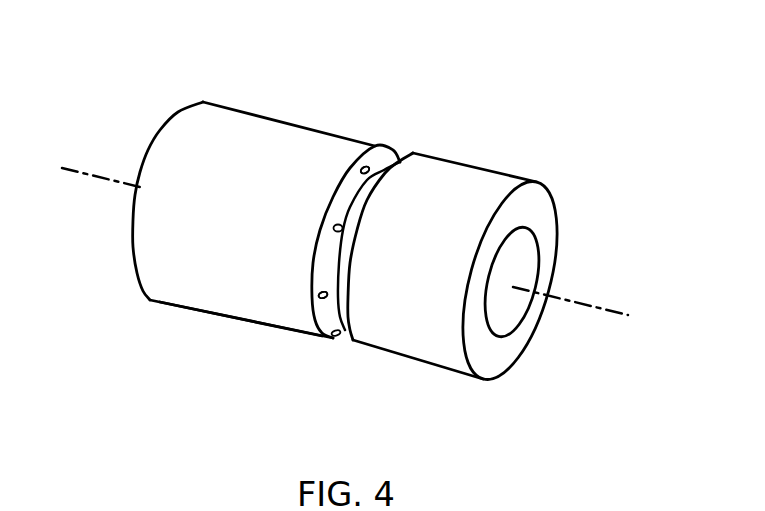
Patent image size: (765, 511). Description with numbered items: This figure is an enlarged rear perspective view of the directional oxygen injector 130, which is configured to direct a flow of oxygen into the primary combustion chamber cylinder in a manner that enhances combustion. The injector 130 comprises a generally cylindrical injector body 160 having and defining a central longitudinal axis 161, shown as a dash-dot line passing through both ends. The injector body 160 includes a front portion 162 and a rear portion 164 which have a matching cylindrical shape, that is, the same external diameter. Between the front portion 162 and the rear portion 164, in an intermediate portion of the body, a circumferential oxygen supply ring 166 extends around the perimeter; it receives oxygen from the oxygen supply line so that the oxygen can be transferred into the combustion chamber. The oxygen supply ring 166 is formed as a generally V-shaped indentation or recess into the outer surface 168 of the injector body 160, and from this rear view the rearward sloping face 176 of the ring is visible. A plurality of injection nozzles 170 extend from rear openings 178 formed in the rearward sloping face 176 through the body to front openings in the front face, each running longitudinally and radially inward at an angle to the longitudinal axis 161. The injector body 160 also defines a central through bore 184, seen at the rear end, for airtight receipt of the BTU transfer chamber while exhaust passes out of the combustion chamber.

The directional oxygen injector 130 is at (520, 93).
The injector body 160 is at (260, 209).
The longitudinal axis 161 is at (105, 176).
The front portion 162 is at (183, 290).
The rear portion 164 is at (486, 260).
The oxygen supply ring 166 is at (402, 154).
The outer surface 168 is at (220, 318).
The injection nozzle 170 is at (369, 160).
The rearward sloping face 176 is at (398, 160).
The rear openings 178 is at (362, 166).
The central through bore 184 is at (516, 268).